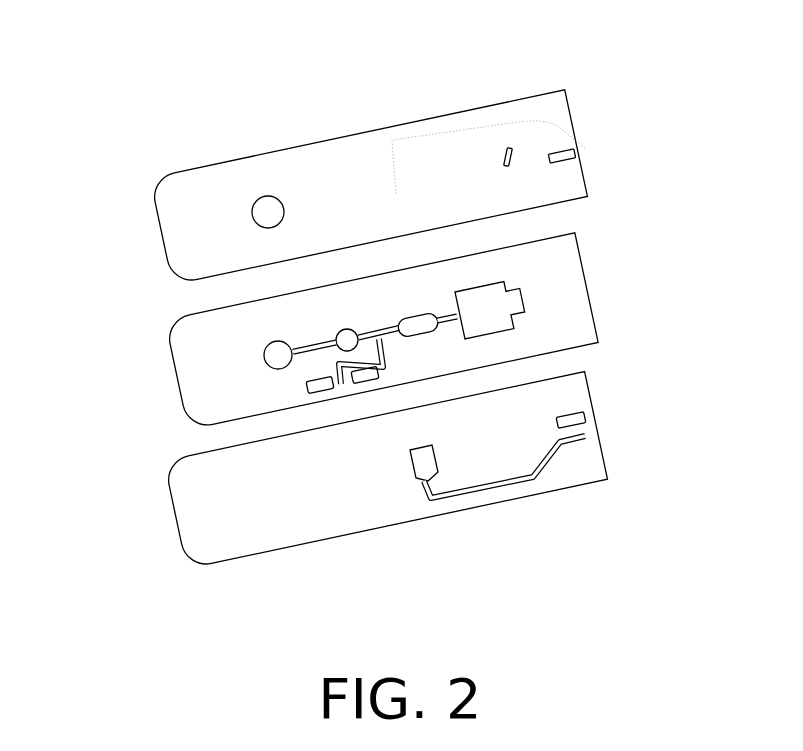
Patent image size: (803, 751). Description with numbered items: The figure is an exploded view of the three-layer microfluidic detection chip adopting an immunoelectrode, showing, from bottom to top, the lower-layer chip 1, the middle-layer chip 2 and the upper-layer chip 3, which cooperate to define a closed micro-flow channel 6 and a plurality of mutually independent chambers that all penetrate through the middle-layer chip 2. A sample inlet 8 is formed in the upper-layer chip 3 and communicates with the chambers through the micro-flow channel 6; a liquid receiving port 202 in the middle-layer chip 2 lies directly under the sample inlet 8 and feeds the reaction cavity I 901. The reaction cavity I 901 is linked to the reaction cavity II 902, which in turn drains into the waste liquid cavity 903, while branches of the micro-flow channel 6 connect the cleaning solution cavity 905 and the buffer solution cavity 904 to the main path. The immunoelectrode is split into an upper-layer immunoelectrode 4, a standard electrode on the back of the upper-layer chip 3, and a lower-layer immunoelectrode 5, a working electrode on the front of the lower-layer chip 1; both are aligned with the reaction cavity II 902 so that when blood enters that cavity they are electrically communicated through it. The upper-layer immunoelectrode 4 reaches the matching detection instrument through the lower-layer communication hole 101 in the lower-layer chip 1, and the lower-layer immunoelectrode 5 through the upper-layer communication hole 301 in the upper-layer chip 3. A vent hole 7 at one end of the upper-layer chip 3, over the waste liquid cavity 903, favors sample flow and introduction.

The lower-layer chip 1 is at (322, 500).
The middle-layer chip 2 is at (198, 373).
The upper-layer chip 3 is at (305, 162).
The upper-layer immunoelectrode 4 is at (410, 183).
The lower-layer immunoelectrode 5 is at (424, 470).
The micro-flow channel 6 is at (384, 362).
The vent hole 7 is at (510, 150).
The sample inlet 8 is at (262, 201).
The lower-layer communication hole 101 is at (582, 421).
The liquid receiving port 202 is at (265, 343).
The upper-layer communication hole 301 is at (582, 144).
The reaction cavity I 901 is at (340, 348).
The reaction cavity II 902 is at (425, 325).
The waste liquid cavity 903 is at (510, 296).
The buffer solution cavity 904 is at (307, 388).
The cleaning solution cavity 905 is at (379, 374).